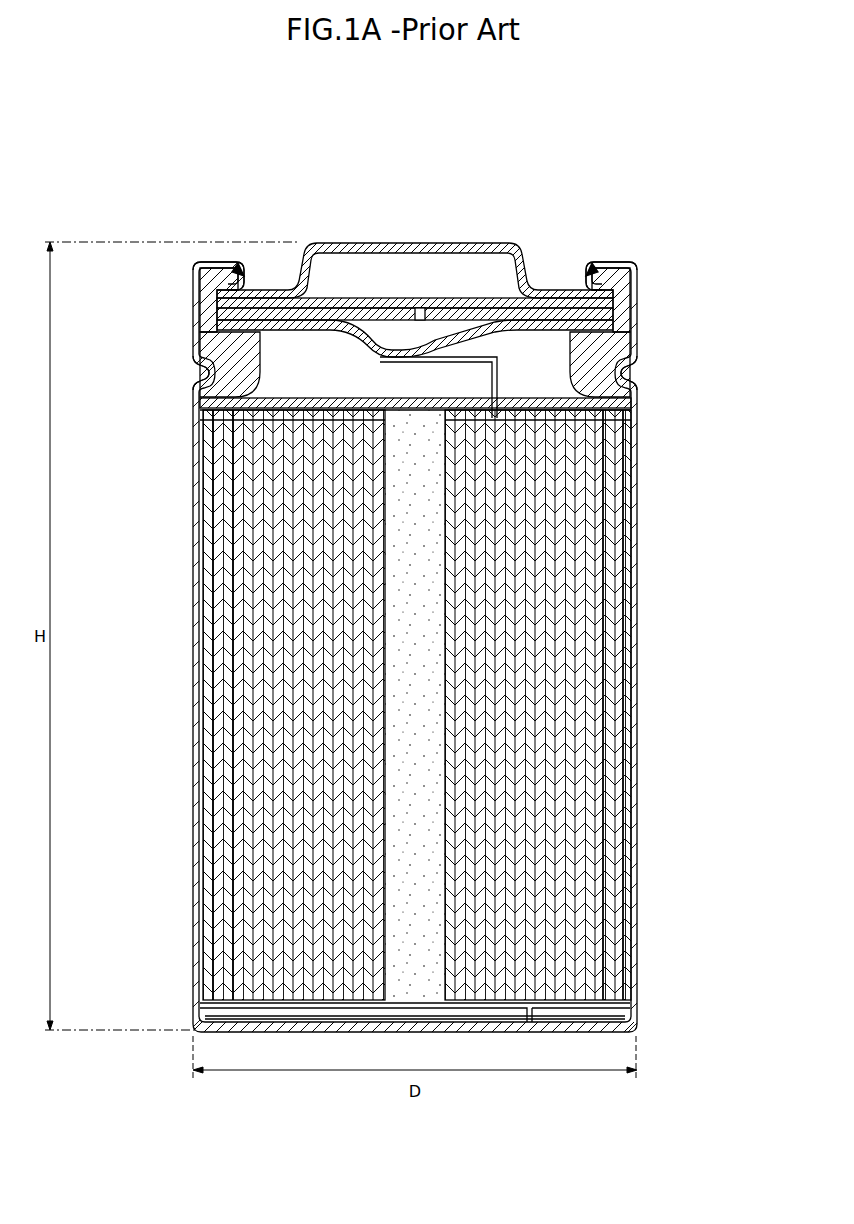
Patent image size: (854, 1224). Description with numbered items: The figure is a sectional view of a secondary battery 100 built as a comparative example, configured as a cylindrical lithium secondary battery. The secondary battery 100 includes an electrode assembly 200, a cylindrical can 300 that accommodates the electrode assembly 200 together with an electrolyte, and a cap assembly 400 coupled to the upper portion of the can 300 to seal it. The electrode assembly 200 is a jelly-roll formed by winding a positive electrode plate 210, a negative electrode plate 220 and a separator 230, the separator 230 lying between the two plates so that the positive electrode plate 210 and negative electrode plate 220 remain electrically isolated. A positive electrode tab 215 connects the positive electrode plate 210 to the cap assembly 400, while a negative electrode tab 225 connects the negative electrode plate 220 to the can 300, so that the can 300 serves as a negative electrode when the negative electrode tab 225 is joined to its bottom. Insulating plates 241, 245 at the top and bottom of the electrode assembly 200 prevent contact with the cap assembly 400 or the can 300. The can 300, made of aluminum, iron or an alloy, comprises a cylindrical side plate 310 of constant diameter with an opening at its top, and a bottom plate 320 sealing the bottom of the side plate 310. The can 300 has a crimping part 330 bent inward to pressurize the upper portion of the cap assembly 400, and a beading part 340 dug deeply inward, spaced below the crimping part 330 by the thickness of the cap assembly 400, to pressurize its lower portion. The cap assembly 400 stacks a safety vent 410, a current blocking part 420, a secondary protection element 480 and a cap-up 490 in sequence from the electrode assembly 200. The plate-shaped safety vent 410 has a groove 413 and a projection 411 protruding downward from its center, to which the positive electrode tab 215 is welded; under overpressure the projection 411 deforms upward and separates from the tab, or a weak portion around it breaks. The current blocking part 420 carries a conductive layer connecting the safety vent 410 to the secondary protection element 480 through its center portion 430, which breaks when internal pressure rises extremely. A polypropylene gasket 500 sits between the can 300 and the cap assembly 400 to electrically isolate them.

The secondary battery 100 is at (674, 223).
The electrode assembly 200 is at (722, 370).
The positive electrode plate 210 is at (602, 546).
The positive electrode tab 215 is at (612, 377).
The negative electrode plate 220 is at (630, 455).
The negative electrode tab 225 is at (518, 1034).
The separator 230 is at (603, 512).
The insulating plate 241 is at (626, 405).
The insulating plate 245 is at (622, 1005).
The cylindrical can 300 is at (108, 318).
The cylindrical side plate 310 is at (197, 449).
The bottom plate 320 is at (200, 1024).
The crimping part 330 is at (206, 284).
The beading part 340 is at (205, 378).
The cap assembly 400 is at (562, 150).
The safety vent 410 is at (363, 330).
The projection 411 is at (296, 325).
The groove 413 is at (236, 266).
The current blocking part 420 is at (486, 318).
The center portion 430 is at (420, 306).
The secondary protection element 480 is at (554, 293).
The cap-up 490 is at (309, 278).
The gasket 500 is at (617, 348).